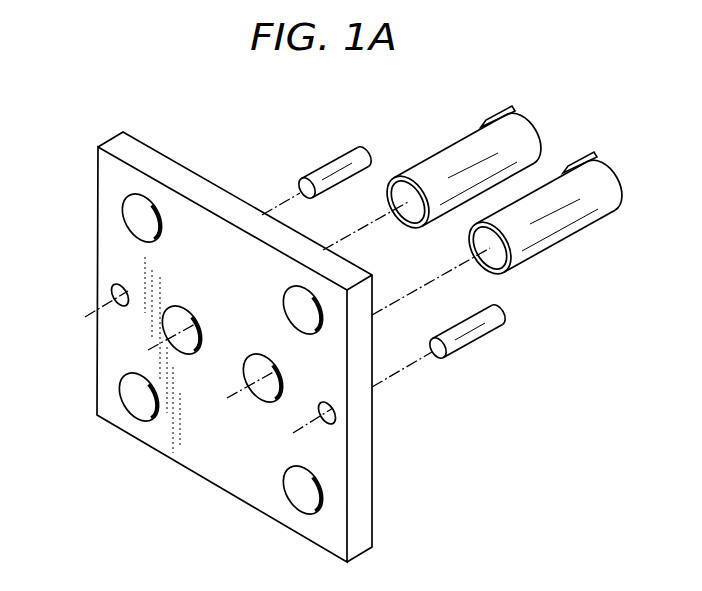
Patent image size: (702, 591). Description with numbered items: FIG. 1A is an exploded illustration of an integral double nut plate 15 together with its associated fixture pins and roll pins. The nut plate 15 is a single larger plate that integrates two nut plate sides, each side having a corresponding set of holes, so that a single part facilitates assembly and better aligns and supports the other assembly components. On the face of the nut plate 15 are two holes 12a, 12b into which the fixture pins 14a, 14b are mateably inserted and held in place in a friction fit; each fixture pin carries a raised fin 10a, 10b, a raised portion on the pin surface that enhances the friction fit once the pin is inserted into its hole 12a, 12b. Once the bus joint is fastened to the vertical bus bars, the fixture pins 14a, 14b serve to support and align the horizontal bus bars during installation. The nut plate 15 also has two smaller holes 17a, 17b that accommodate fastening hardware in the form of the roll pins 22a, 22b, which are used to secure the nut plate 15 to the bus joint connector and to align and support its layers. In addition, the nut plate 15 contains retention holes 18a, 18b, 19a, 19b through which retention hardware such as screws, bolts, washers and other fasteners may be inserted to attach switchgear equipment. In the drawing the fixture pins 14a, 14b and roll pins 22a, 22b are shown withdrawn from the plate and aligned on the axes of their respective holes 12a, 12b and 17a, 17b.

The raised fin 10a is at (493, 110).
The raised fin 10b is at (572, 157).
The hole 12a is at (187, 308).
The hole 12b is at (254, 400).
The fixture pin 14a is at (458, 142).
The fixture pin 14b is at (610, 160).
The nut plate 15 is at (358, 468).
The hole 17a is at (113, 294).
The hole 17b is at (336, 412).
The retention hole 18a is at (128, 220).
The retention hole 18b is at (304, 334).
The retention hole 19a is at (128, 405).
The retention hole 19b is at (300, 496).
The roll pin 22a is at (325, 162).
The roll pin 22b is at (488, 337).